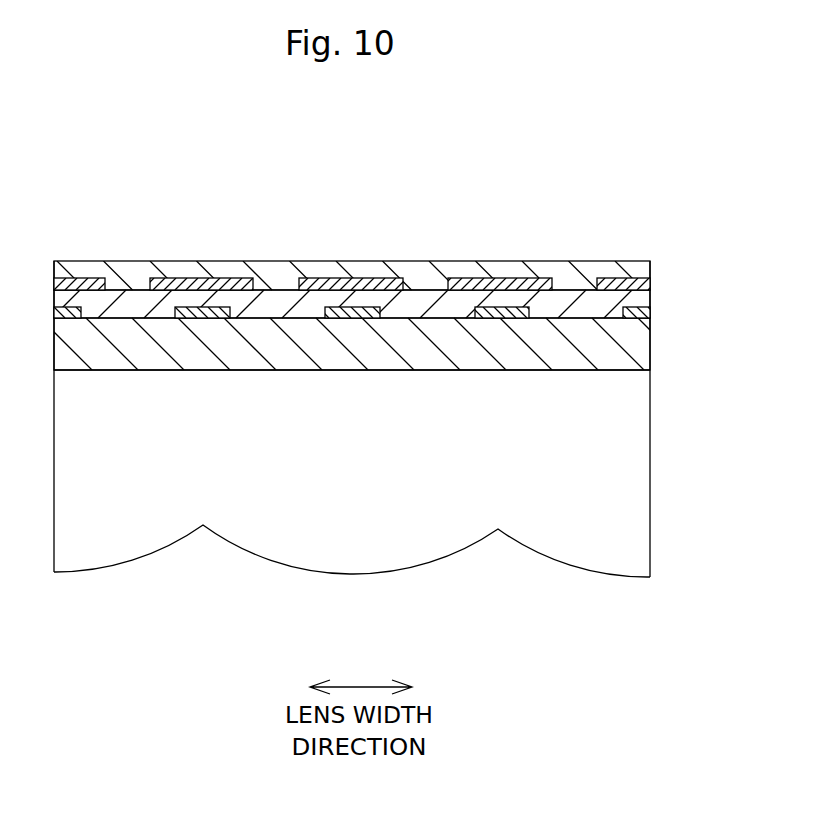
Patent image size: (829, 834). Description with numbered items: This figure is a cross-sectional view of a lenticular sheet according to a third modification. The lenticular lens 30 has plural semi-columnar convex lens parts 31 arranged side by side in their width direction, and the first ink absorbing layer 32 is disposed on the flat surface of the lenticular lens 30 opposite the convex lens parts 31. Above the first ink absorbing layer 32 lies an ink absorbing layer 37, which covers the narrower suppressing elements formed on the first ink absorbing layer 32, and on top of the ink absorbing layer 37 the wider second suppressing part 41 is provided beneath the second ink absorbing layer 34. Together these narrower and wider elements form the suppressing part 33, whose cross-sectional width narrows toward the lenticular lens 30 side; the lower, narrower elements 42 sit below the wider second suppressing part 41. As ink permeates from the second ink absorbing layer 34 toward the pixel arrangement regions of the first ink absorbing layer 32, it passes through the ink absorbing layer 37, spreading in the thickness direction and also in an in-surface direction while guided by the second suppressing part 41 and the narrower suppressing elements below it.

The lenticular lens 30 is at (633, 437).
The convex lens parts 31 is at (435, 518).
The first ink absorbing layer 32 is at (642, 355).
The suppressing part 33 is at (351, 233).
The second ink absorbing layer 34 is at (640, 269).
The ink absorbing layer 37 is at (637, 302).
The second suppressing part 41 is at (322, 283).
The second electrodes 42 is at (348, 308).